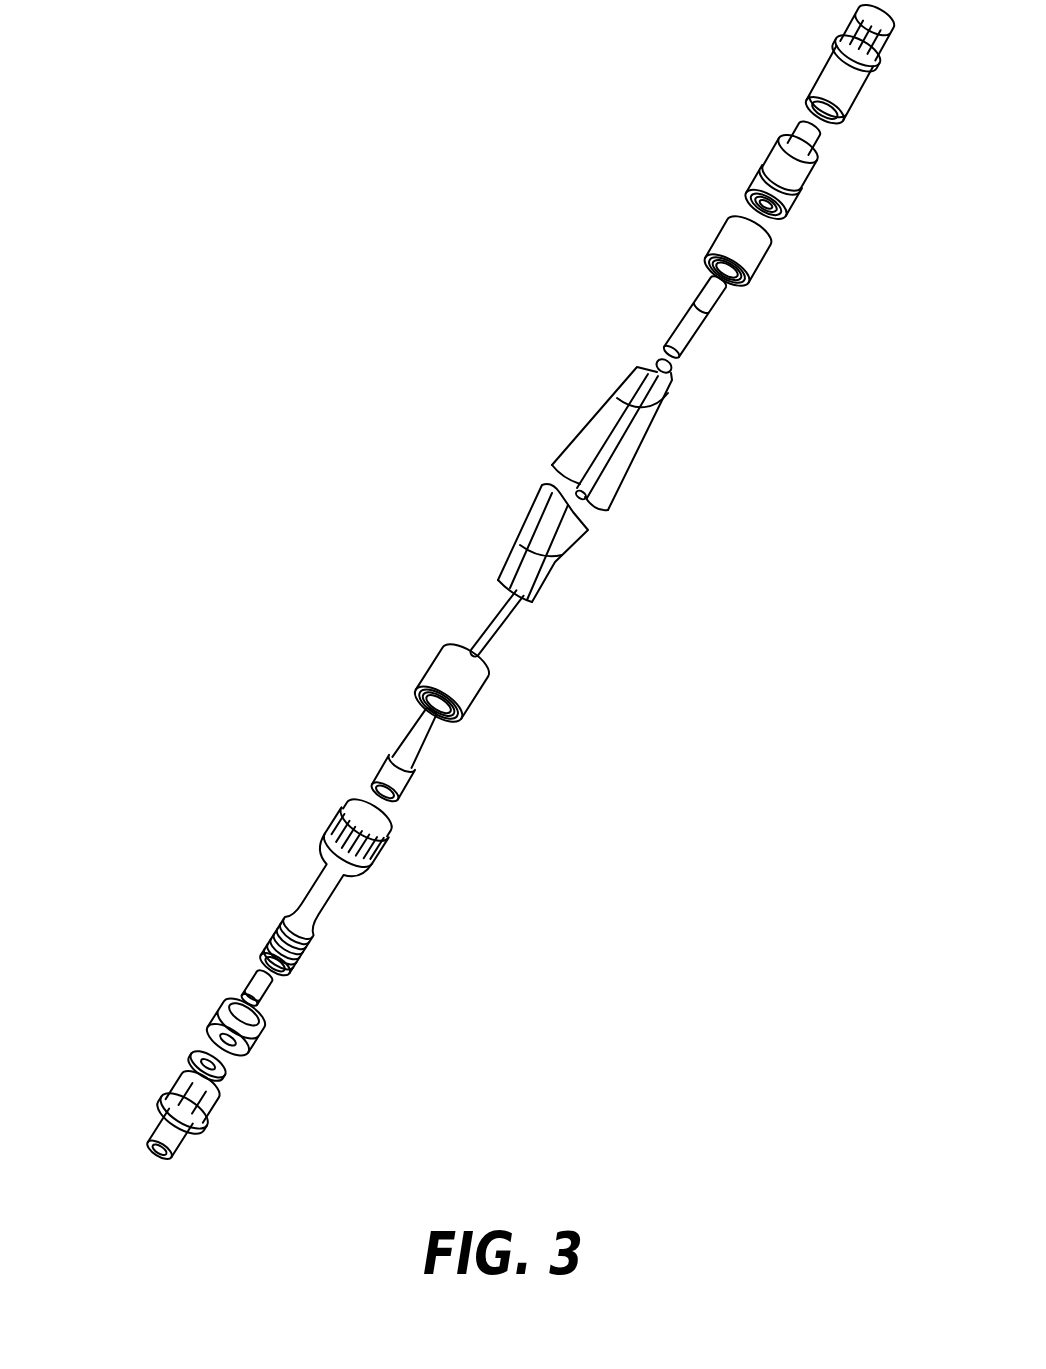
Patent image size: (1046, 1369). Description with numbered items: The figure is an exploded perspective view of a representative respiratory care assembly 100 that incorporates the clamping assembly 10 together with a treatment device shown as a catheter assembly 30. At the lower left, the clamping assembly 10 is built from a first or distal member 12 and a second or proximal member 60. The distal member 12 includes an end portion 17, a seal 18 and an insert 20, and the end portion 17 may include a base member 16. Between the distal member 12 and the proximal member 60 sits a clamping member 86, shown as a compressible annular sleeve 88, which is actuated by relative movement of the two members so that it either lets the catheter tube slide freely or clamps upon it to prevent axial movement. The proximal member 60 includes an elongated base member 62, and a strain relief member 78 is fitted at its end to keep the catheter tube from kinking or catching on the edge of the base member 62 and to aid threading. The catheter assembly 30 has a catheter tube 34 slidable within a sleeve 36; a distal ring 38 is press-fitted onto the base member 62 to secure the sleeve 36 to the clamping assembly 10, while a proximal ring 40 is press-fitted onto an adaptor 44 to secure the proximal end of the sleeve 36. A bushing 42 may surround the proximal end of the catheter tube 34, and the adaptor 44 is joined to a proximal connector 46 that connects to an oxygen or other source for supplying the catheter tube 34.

The clamping assembly 10 is at (123, 845).
The distal member 12 is at (130, 1098).
The base member 16 is at (182, 1135).
The end portion 17 is at (135, 1133).
The seal 18 is at (213, 1070).
The insert 20 is at (243, 1040).
The catheter assembly 30 is at (466, 458).
The catheter tube 34 is at (498, 635).
The sleeve 36 is at (580, 452).
The distal ring 38 is at (440, 672).
The proximal ring 40 is at (722, 243).
The bushing 42 is at (700, 322).
The adaptor 44 is at (780, 160).
The proximal connector 46 is at (838, 74).
The proximal member 60 is at (293, 803).
The base member 62 is at (320, 880).
The strain relief member 78 is at (410, 762).
The clamping member 86 is at (230, 980).
The compressible annular sleeve 88 is at (265, 988).
The respiratory care assembly 100 is at (770, 432).